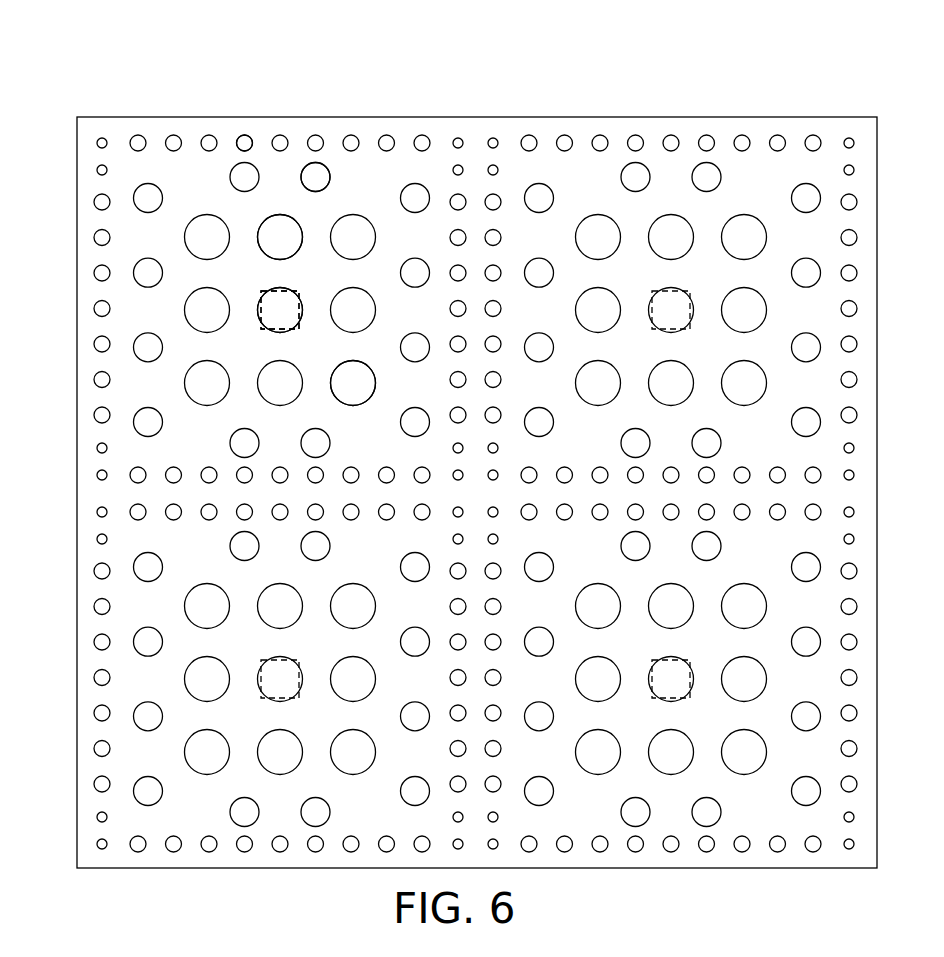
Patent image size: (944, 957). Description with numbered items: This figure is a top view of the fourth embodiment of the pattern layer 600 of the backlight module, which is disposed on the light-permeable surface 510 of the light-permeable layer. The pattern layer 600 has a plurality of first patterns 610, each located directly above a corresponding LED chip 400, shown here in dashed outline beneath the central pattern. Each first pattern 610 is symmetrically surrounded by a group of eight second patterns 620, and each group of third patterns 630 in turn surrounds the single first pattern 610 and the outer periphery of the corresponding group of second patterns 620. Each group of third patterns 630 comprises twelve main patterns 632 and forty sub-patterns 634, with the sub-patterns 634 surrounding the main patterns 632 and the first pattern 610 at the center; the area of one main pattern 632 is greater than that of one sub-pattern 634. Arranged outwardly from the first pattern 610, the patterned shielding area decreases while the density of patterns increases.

The pattern layer 600 is at (460, 447).
The group of third patterns 630 is at (302, 103).
The sub-pattern 634 is at (247, 136).
The main pattern 632 is at (321, 166).
The light-permeable surface 510 is at (380, 263).
The second pattern 620 is at (295, 243).
The first pattern 610 is at (262, 293).
The LED chip 400 is at (268, 332).